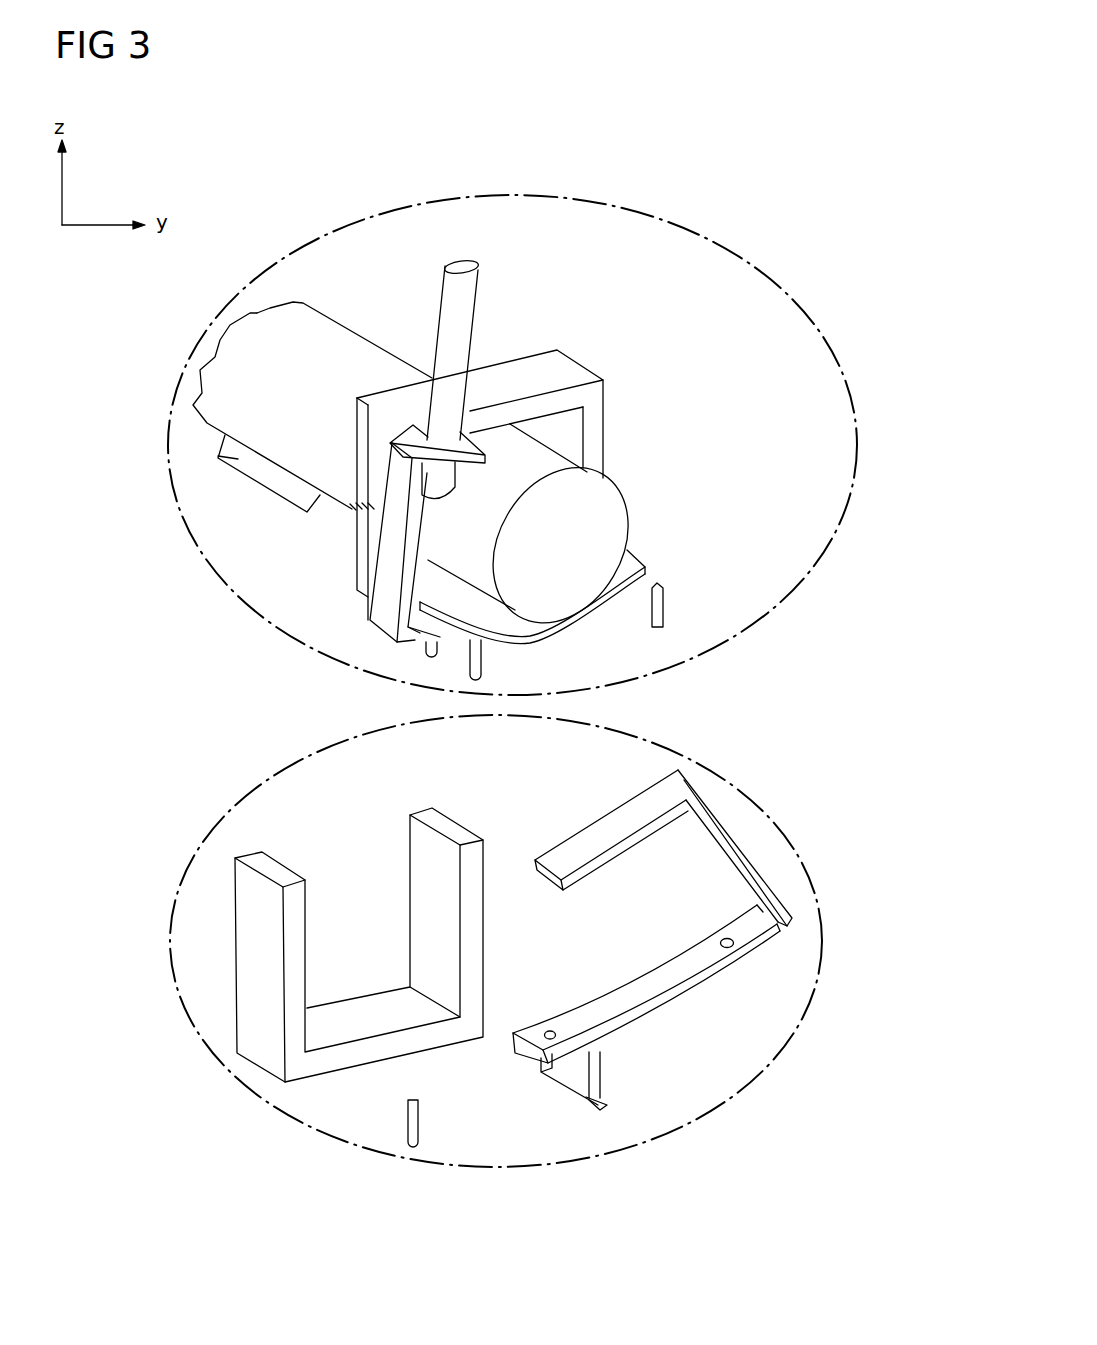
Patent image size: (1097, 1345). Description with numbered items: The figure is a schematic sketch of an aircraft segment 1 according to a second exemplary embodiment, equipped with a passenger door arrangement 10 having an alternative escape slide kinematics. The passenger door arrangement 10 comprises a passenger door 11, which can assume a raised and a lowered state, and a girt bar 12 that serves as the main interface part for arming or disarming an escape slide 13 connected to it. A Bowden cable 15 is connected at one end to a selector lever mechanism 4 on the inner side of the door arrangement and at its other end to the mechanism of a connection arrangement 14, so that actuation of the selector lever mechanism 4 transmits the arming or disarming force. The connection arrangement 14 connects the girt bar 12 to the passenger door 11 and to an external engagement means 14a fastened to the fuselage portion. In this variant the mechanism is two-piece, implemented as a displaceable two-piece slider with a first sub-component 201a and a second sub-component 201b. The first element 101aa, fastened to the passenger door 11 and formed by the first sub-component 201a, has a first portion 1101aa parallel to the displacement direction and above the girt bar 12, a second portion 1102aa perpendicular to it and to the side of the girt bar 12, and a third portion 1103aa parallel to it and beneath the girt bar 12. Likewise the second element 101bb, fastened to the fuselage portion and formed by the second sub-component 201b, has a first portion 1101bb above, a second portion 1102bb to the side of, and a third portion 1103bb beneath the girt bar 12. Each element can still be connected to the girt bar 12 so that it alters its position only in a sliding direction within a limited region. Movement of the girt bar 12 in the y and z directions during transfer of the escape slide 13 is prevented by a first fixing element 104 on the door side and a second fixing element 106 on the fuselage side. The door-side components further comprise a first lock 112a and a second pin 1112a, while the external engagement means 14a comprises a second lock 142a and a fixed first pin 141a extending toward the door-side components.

The aircraft segment 1 is at (750, 154).
The passenger door arrangement 10 is at (270, 217).
The passenger door 11 is at (804, 267).
The girt bar 12 is at (345, 353).
The escape slide 13 is at (218, 458).
The Bowden cable 15 is at (450, 303).
The selector lever mechanism 4 is at (460, 258).
The first fixing element 104 is at (525, 372).
The first portion 1101aa is at (362, 401).
The first element 101aa is at (360, 507).
The second portion 1102aa is at (360, 545).
The first sub-component 201a is at (371, 621).
The first lock 112a is at (467, 650).
The third portion 1103aa is at (637, 553).
The second pin 1112a is at (663, 613).
The connection arrangement 14 is at (207, 713).
The external engagement means 14a is at (729, 811).
The first portion 1101bb is at (665, 793).
The second portion 1102bb is at (743, 850).
The second sub-component 201b is at (793, 926).
The third portion 1103bb is at (667, 983).
The second element 101bb is at (655, 1022).
The second fixing element 106 is at (267, 1060).
The first pin 141a is at (408, 1140).
The second lock 142a is at (601, 1104).